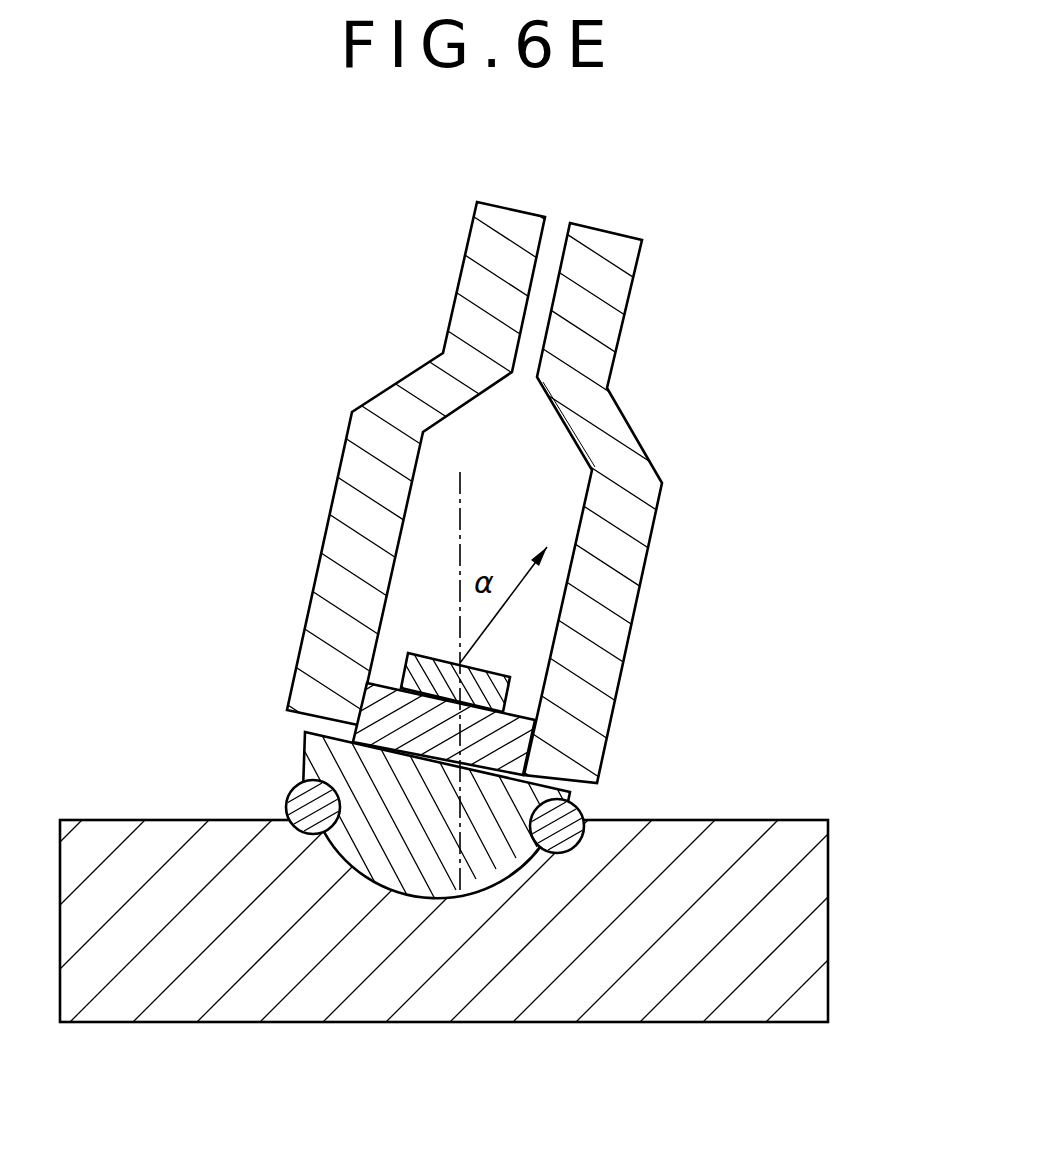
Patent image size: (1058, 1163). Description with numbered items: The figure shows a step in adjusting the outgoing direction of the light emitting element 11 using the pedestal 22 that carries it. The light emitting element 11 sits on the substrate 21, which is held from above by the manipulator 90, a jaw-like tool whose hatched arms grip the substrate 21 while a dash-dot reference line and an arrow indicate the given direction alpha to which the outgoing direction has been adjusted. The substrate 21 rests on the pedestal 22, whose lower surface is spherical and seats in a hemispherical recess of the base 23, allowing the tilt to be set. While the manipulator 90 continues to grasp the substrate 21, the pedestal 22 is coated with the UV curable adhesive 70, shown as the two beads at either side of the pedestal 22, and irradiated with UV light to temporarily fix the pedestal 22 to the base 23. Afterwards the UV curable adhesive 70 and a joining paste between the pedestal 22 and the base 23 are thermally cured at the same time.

The manipulator 90 is at (597, 320).
The light emitting element 11 is at (495, 684).
The substrate 21 is at (510, 750).
The pedestal 22 is at (422, 878).
The base 23 is at (802, 921).
The UV curable adhesive 70 is at (300, 797).